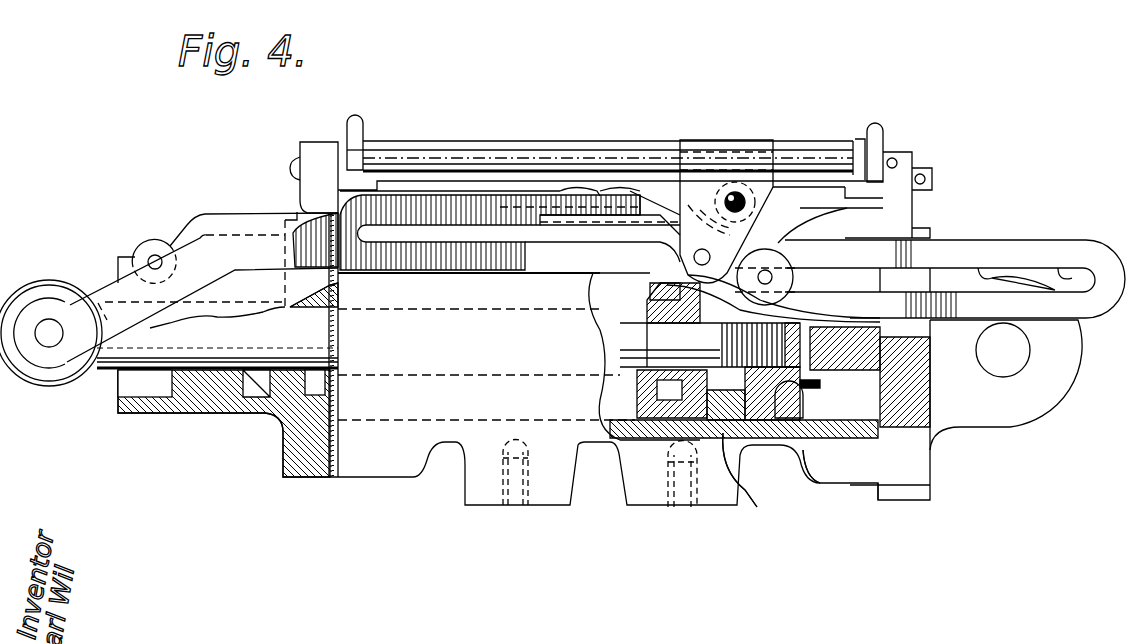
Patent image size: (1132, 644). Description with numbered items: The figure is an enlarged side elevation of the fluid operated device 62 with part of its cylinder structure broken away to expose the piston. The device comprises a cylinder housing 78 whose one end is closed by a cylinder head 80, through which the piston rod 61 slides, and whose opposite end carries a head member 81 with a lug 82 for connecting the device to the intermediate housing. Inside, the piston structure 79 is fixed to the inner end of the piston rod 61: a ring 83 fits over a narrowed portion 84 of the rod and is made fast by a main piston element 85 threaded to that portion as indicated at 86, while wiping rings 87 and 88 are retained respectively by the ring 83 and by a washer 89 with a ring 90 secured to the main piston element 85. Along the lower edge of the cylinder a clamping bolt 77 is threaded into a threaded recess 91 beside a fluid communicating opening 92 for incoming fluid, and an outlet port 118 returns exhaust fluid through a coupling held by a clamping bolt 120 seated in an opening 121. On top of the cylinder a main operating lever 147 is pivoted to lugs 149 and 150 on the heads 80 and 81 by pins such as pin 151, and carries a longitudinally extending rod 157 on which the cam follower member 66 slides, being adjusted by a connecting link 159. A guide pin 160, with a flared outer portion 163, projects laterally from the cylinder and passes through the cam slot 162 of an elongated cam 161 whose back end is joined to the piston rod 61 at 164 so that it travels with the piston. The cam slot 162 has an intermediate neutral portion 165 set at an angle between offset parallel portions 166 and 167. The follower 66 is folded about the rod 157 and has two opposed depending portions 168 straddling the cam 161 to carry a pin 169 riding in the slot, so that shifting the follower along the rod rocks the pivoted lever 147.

The piston rod 61 is at (107, 370).
The fluid operated device 62 is at (347, 484).
The cam follower member 66 is at (728, 127).
The clamping bolt 77 is at (675, 505).
The cylinder housing 78 is at (388, 470).
The piston structure 79 is at (905, 350).
The cylinder head 80 is at (283, 465).
The head member 81 is at (920, 468).
The lug 82 is at (1037, 413).
The ring 83 is at (655, 386).
The narrowed portion 84 is at (648, 340).
The main piston element 85 is at (762, 438).
The threaded connection 86 is at (775, 320).
The wiping ring 87 is at (742, 487).
The wiping ring 88 is at (808, 455).
The washer 89 is at (800, 405).
The ring 90 is at (822, 384).
The threaded recess 91 is at (662, 502).
The fluid communicating opening 92 is at (700, 496).
The outlet port 118 is at (502, 445).
The clamping bolt 120 is at (512, 502).
The opening 121 is at (505, 496).
The main operating lever 147 is at (420, 143).
The lug 149 is at (318, 148).
The lug 150 is at (910, 152).
The pin 151 is at (295, 160).
The rod 157 is at (450, 155).
The connecting link 159 is at (224, 220).
The guide pin 160 is at (770, 258).
The elongated cam 161 is at (955, 240).
The cam slot 162 is at (990, 276).
The flared outer portion 163 is at (792, 272).
The connection 164 is at (49, 318).
The intermediate neutral portion 165 is at (469, 264).
The offset parallel portion 166 is at (497, 233).
The offset parallel portion 167 is at (1068, 278).
The depending portions 168 is at (700, 232).
The pin 169 is at (693, 259).